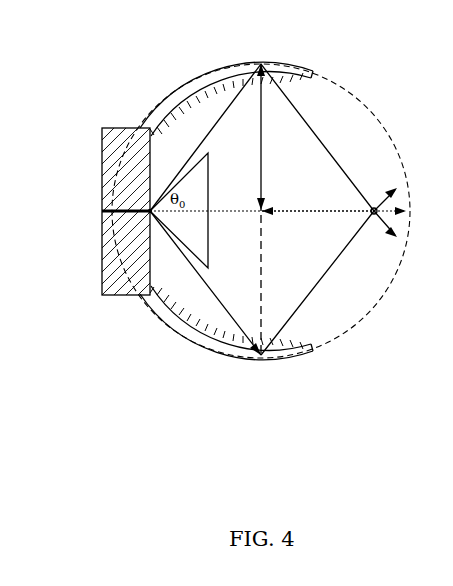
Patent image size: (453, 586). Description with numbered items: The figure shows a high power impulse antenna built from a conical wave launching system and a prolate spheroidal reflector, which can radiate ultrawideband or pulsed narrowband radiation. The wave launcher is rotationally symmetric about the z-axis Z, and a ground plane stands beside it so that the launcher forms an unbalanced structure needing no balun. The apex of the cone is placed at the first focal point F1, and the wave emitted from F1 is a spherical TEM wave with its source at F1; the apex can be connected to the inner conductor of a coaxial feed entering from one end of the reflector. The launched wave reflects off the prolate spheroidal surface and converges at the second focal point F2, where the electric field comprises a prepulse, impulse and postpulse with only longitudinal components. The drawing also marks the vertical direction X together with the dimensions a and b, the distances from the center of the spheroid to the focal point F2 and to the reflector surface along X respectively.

The first focal point F1 is at (159, 222).
The second focal point F2 is at (381, 212).
The X axis / top vertex X is at (262, 124).
The z-axis Z is at (291, 221).
The semi-major axis distance a is at (318, 201).
The semi-minor axis distance b is at (270, 137).